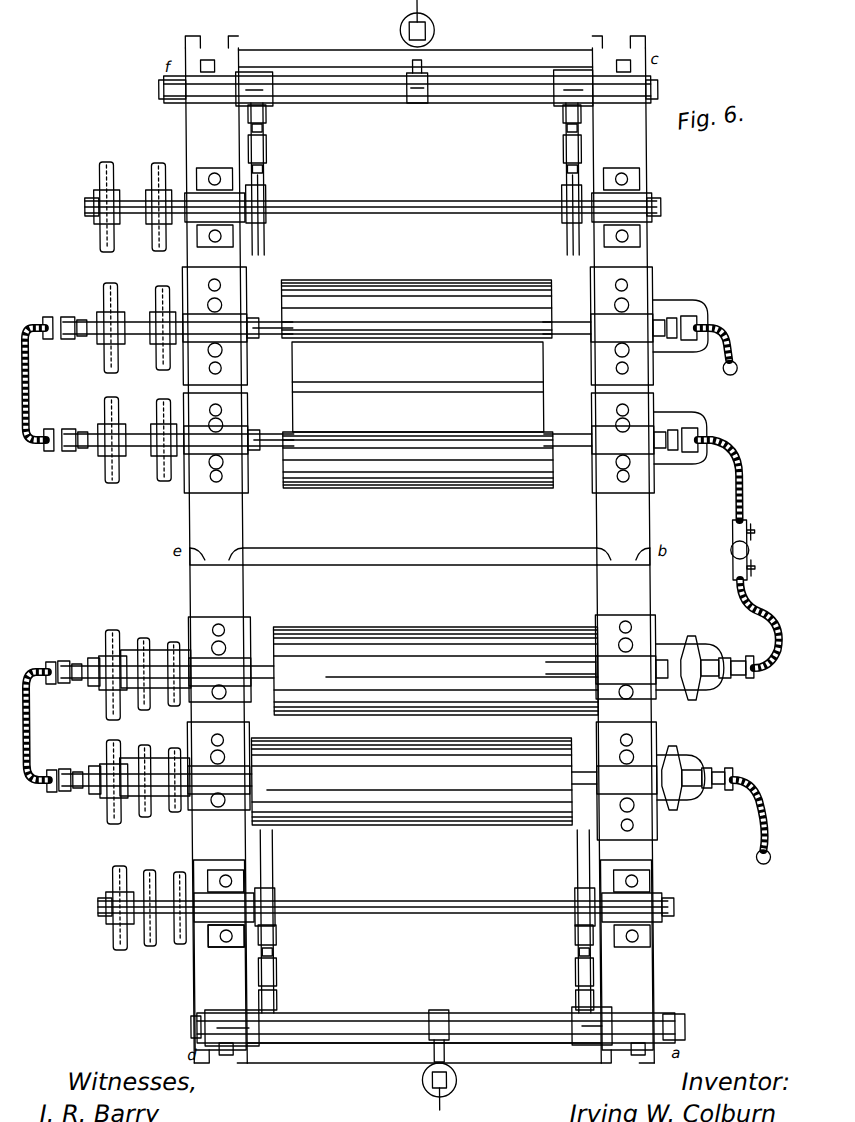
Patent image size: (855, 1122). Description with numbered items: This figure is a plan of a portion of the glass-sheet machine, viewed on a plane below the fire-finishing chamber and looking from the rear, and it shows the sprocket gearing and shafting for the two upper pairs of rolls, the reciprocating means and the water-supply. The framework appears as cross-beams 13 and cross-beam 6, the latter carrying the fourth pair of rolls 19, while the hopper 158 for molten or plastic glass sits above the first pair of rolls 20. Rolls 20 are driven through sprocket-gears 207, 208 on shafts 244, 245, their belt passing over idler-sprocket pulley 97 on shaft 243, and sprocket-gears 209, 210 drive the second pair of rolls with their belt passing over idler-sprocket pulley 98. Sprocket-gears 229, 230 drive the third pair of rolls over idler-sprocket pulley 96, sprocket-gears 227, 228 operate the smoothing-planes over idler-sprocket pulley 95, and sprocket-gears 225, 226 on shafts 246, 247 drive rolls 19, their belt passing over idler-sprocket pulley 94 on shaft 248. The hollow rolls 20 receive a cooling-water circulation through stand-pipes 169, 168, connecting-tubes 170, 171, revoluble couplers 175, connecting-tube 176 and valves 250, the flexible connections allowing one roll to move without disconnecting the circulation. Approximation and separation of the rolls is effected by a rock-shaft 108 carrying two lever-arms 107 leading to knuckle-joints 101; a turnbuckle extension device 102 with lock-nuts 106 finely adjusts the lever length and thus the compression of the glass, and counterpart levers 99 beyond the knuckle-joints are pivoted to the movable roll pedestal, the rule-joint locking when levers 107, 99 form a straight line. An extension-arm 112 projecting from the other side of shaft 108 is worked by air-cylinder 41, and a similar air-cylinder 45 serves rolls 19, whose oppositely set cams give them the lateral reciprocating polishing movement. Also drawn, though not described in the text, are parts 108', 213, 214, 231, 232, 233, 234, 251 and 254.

The cross-beam 6 is at (424, 955).
The cross-beam 13 is at (419, 549).
The fourth pair of rolls 19 is at (424, 726).
The first pair of rolls 20 is at (417, 384).
The air-cylinder 41 is at (428, 23).
The air-cylinder 45 is at (427, 1060).
The idler-sprocket pulley 94 is at (116, 898).
The idler-sprocket pulley 95 is at (145, 896).
The idler-sprocket pulley 96 is at (177, 895).
The idler-sprocket pulley 97 is at (103, 172).
The idler-sprocket pulley 98 is at (150, 199).
The counterpart lever 99 is at (421, 558).
The knuckle-joint 101 is at (268, 196).
The turnbuckle extension device 102 is at (420, 560).
The lock-nut 106 is at (420, 539).
The lever-arm 107 is at (266, 113).
The rock-shaft 108 is at (438, 1025).
The upper cross bar 108' is at (408, 86).
The extension-arm 112 is at (420, 66).
The hopper 158 is at (418, 387).
The stand-pipe 168 is at (732, 352).
The stand-pipe 169 is at (756, 550).
The connecting-tube 170 is at (641, 456).
The connecting-tube 171 is at (712, 325).
The revoluble coupler 175 is at (398, 555).
The connecting-tube 176 is at (44, 384).
The sprocket-gear 207 is at (104, 292).
The sprocket-gear 208 is at (101, 446).
The sprocket-gear 209 is at (151, 320).
The sprocket-gear 210 is at (155, 447).
The bevel gear coupling 213 is at (645, 657).
The bevel gear coupling 214 is at (648, 781).
The sprocket-gear 225 is at (108, 665).
The sprocket-gear 226 is at (108, 772).
The sprocket-gear 227 is at (144, 660).
The sprocket-gear 228 is at (142, 769).
The sprocket-gear 229 is at (179, 661).
The sprocket-gear 230 is at (178, 766).
The hose 231 is at (759, 624).
The hose 232 is at (748, 815).
The hose end ring 233 is at (750, 855).
The hose 234 is at (50, 726).
The shaft 243 is at (372, 207).
The shaft 244 is at (176, 326).
The shaft 245 is at (256, 430).
The shaft 246 is at (165, 659).
The shaft 247 is at (155, 766).
The shaft 248 is at (386, 908).
The valve 250 is at (762, 527).
The valve handle 251 is at (764, 571).
The bearing cap 254 is at (224, 944).